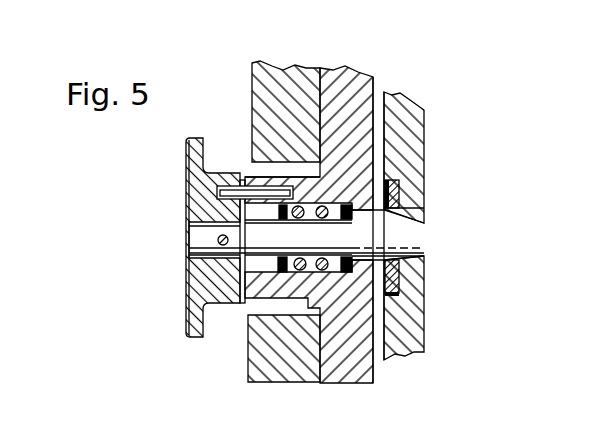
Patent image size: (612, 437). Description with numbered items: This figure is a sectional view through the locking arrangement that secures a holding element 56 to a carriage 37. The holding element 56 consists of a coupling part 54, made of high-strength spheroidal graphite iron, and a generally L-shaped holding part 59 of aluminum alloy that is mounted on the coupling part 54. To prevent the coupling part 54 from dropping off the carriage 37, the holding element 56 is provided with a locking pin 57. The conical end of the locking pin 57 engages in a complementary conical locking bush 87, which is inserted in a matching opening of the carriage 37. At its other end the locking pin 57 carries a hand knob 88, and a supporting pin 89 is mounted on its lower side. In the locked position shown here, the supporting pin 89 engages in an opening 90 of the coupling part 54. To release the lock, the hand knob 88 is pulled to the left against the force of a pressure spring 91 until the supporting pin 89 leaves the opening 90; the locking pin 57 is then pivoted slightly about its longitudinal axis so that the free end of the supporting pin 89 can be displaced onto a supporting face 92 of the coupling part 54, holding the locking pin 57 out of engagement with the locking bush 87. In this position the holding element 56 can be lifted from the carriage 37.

The carriage 37 is at (428, 311).
The coupling part 54 is at (373, 78).
The holding element 56 is at (307, 60).
The locking pin 57 is at (412, 227).
The holding part 59 is at (252, 77).
The locking bush 87 is at (418, 270).
The hand knob 88 is at (196, 336).
The supporting pin 89 is at (231, 186).
The opening 90 is at (276, 184).
The pressure spring 91 is at (338, 207).
The supporting face 92 is at (243, 303).